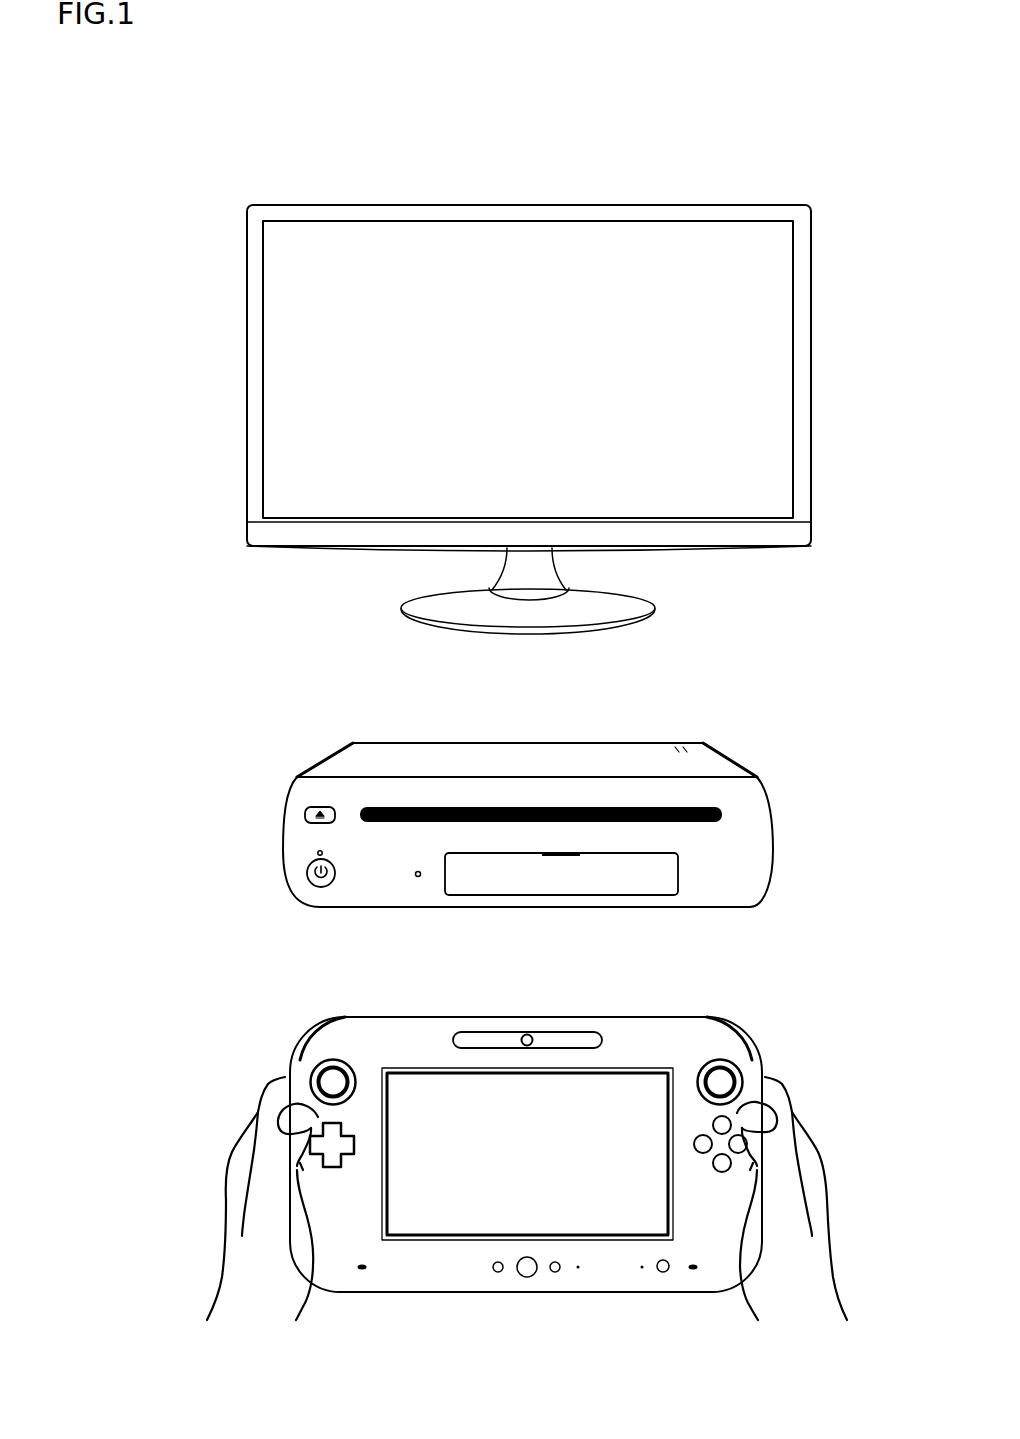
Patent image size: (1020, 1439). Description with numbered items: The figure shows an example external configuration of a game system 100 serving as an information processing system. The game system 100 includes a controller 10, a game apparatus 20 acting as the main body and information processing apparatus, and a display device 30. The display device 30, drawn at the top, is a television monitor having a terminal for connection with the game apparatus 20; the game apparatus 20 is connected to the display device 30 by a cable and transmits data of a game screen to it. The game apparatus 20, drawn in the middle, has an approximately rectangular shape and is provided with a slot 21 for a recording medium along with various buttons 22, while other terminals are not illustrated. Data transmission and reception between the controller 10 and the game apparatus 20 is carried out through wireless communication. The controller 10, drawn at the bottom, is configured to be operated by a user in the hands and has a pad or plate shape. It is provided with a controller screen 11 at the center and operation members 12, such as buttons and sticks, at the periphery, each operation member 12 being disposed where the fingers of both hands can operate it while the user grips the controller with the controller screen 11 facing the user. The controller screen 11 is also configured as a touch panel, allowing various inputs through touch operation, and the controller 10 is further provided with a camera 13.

The game system 100 is at (343, 163).
The display device 30 is at (818, 374).
The game apparatus 20 is at (765, 733).
The slot 21 is at (558, 807).
The buttons 22 is at (304, 814).
The controller 10 is at (765, 990).
The controller screen 11 is at (621, 1066).
The operation member 12 is at (330, 1060).
The camera 13 is at (525, 1034).